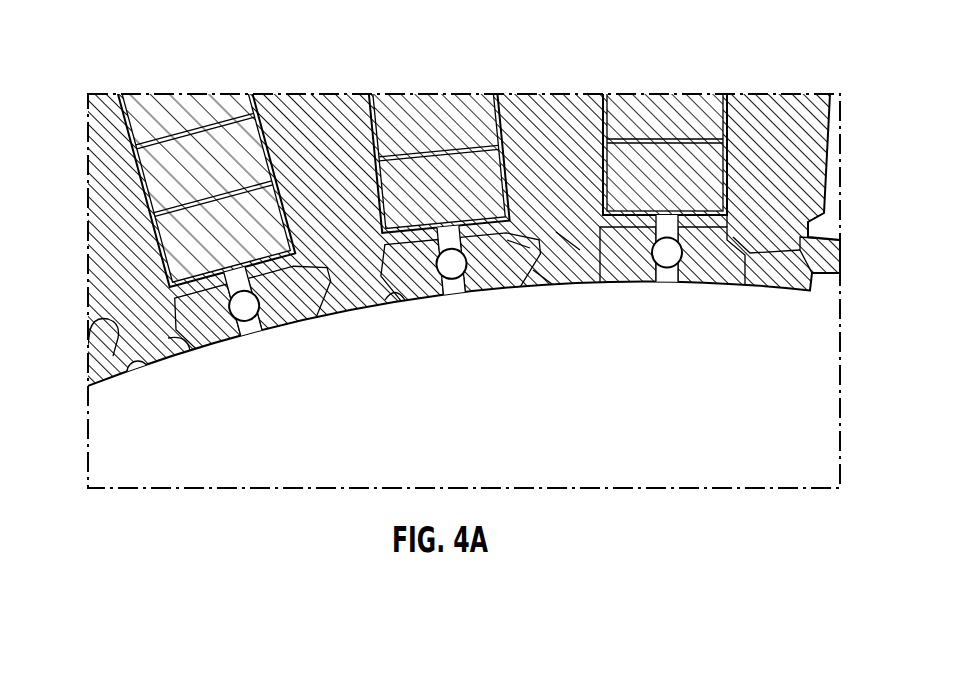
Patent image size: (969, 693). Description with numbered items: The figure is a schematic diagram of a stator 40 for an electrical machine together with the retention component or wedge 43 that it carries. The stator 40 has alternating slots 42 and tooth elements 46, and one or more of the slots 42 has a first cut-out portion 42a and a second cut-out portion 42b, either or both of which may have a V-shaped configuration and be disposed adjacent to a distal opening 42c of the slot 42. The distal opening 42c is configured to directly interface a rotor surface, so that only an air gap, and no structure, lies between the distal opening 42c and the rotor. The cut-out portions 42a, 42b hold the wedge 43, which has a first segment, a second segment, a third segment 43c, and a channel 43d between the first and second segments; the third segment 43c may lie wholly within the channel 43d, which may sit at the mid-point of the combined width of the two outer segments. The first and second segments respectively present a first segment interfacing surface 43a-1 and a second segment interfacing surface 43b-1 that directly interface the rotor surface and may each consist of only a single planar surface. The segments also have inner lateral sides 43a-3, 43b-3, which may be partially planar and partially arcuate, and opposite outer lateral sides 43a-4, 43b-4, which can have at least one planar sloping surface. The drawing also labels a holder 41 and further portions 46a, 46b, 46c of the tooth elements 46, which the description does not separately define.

The stator 40 is at (661, 78).
The holder 41 is at (698, 110).
The slot 42 is at (712, 175).
The first cut-out portion 42a is at (805, 262).
The second cut-out portion 42b is at (712, 258).
The distal opening 42c is at (418, 300).
The retention component or wedge 43 is at (404, 212).
The first segment interfacing surface 43a-1 is at (437, 245).
The first segment inner lateral side 43a-3 is at (432, 300).
The first segment outer lateral side 43a-4 is at (402, 292).
The second segment interfacing surface 43b-1 is at (560, 230).
The second segment inner lateral side 43b-3 is at (473, 292).
The second segment outer lateral side 43b-4 is at (547, 290).
The third segment 43c is at (455, 290).
The channel 43d is at (513, 237).
The tooth element 46 is at (327, 128).
The second cassette first portion 46a is at (117, 328).
The second cassette second portion 46b is at (183, 348).
The second cassette roller 46c is at (127, 378).